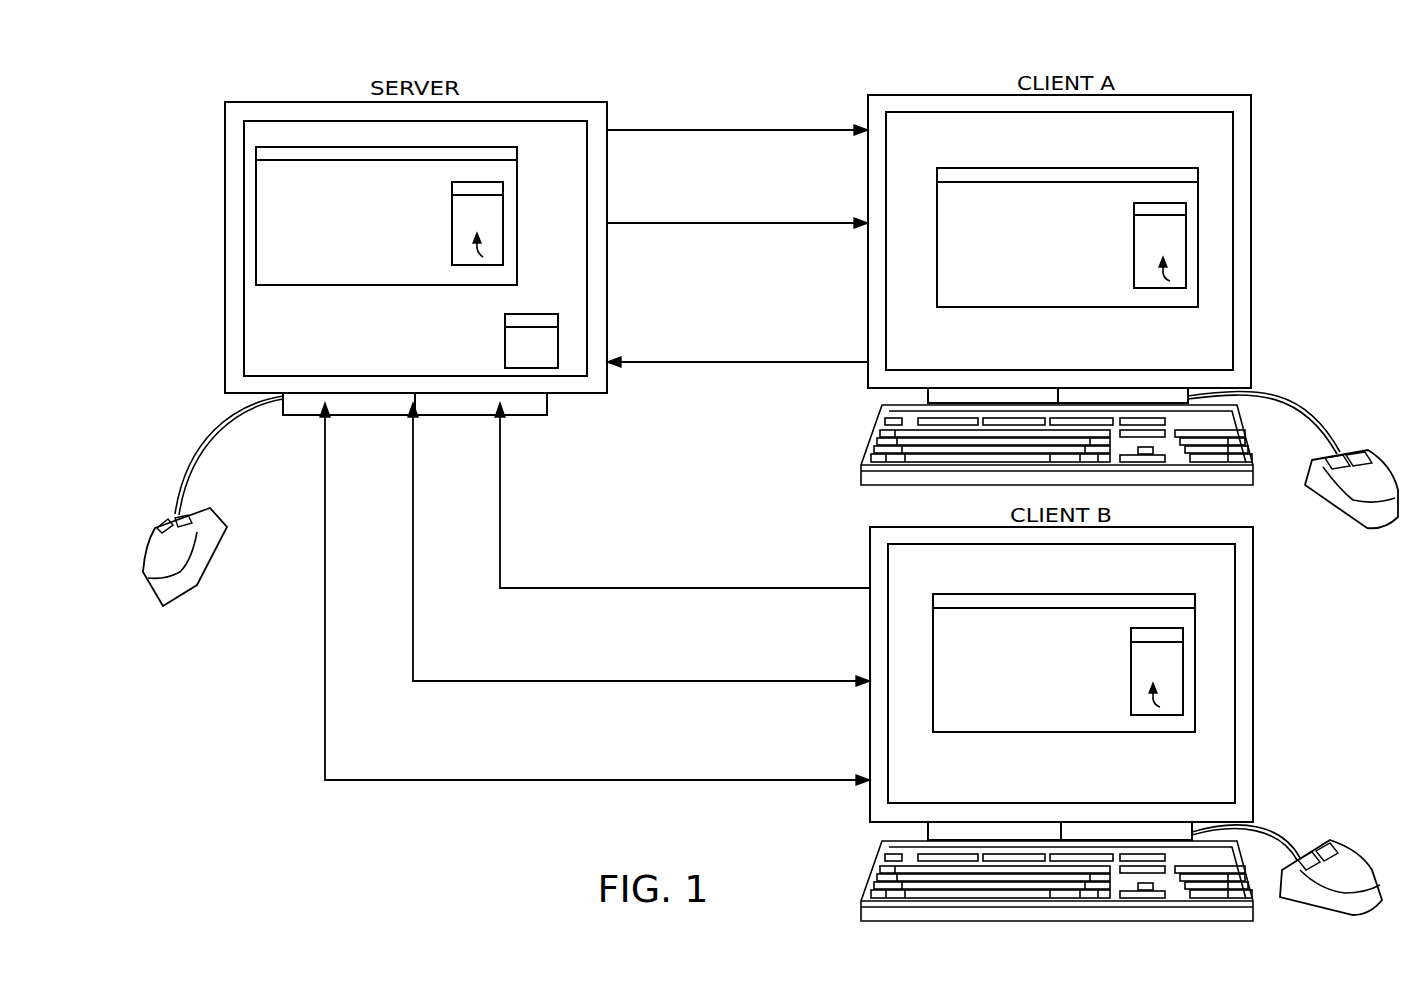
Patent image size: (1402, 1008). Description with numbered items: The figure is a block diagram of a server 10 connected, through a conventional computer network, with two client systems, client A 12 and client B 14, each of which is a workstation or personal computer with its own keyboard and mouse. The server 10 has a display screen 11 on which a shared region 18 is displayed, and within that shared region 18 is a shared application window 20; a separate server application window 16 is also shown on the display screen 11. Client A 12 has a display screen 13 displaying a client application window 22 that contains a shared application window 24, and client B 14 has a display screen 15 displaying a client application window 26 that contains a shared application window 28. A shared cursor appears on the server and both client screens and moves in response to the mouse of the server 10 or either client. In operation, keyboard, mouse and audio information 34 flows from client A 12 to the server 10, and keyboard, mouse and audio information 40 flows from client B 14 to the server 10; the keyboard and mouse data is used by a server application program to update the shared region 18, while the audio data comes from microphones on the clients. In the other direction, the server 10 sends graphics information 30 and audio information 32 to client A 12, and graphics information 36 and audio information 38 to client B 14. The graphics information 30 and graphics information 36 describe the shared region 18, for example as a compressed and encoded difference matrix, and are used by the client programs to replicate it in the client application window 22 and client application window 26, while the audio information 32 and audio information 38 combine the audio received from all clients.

The server 10 is at (225, 170).
The display screen 11 is at (244, 207).
The client A 12 is at (1251, 190).
The display screen 13 is at (1233, 137).
The client B 14 is at (1253, 673).
The display screen 15 is at (1235, 590).
The server application window 16 is at (505, 346).
The shared region 18 is at (303, 285).
The shared application window 20 is at (452, 223).
The client application window 22 is at (937, 235).
The shared application window 24 is at (1167, 288).
The client application window 26 is at (989, 732).
The shared application window 28 is at (1131, 670).
The graphics information 30 is at (735, 221).
The audio information 32 is at (740, 128).
The keyboard, mouse and audio information 34 is at (737, 365).
The graphics information 36 is at (520, 683).
The audio information 38 is at (478, 782).
The keyboard, mouse and audio information 40 is at (557, 590).